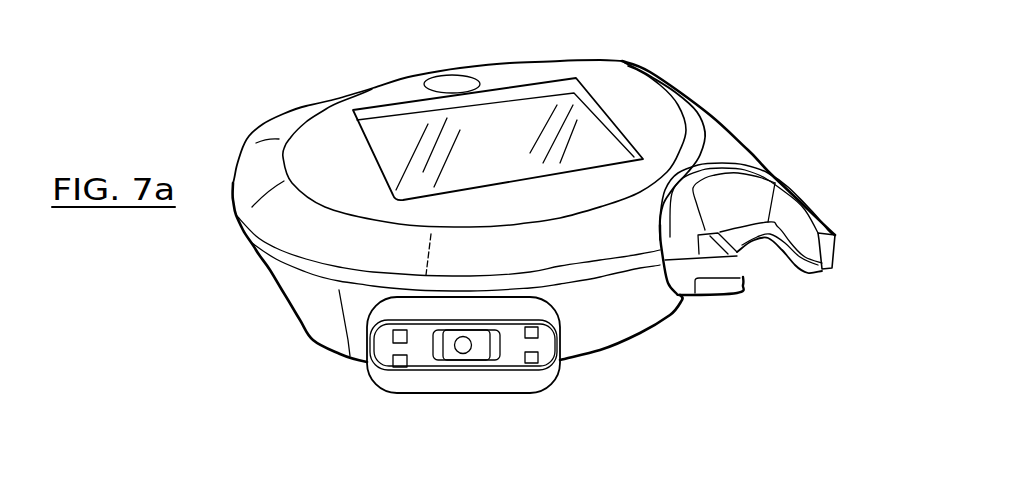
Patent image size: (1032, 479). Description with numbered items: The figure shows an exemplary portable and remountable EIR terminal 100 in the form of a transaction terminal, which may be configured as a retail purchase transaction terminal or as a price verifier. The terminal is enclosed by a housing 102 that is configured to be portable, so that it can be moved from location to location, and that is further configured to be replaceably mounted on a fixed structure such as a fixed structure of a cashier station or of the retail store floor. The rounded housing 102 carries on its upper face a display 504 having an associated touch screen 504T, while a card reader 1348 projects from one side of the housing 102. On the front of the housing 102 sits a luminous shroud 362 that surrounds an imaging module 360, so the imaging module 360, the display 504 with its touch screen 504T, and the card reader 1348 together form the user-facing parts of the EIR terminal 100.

The EIR terminal 100 is at (787, 130).
The housing 102 is at (610, 330).
The display 504 is at (578, 120).
The touch screen 504T is at (498, 139).
The card reader 1348 is at (778, 279).
The imaging module 360 is at (489, 375).
The luminous shroud 362 is at (422, 382).